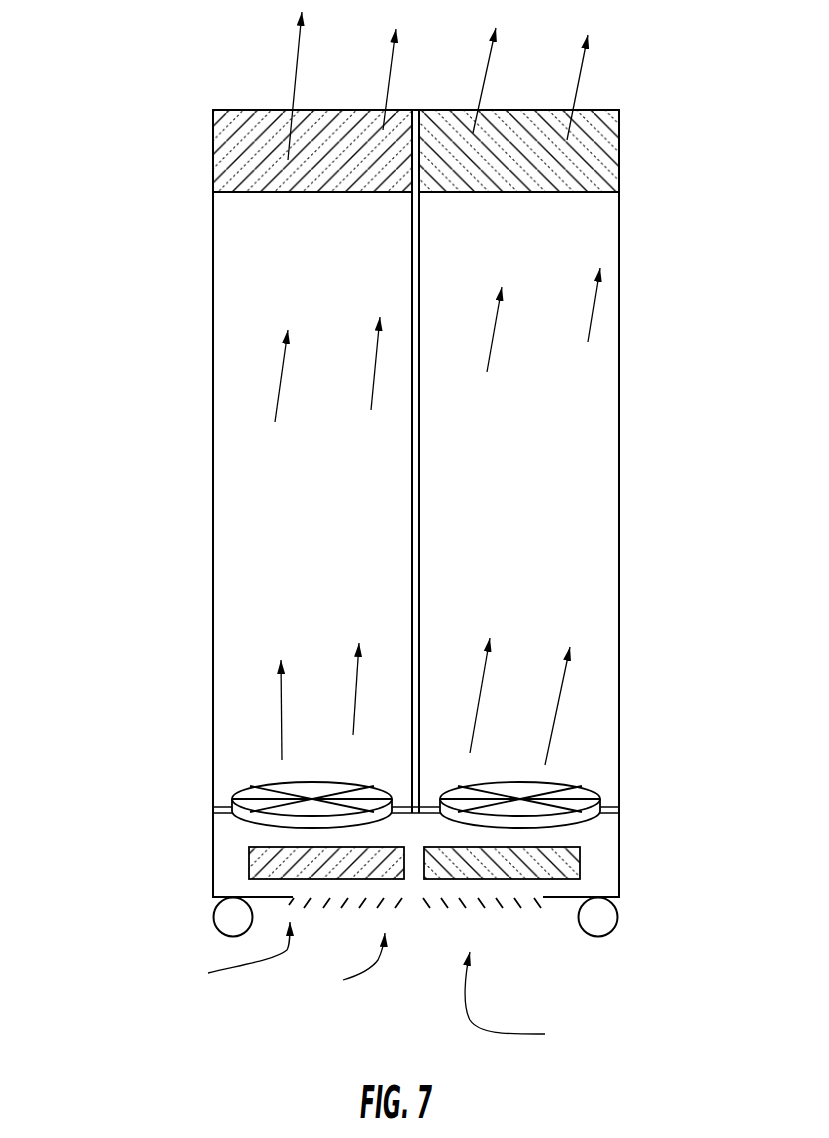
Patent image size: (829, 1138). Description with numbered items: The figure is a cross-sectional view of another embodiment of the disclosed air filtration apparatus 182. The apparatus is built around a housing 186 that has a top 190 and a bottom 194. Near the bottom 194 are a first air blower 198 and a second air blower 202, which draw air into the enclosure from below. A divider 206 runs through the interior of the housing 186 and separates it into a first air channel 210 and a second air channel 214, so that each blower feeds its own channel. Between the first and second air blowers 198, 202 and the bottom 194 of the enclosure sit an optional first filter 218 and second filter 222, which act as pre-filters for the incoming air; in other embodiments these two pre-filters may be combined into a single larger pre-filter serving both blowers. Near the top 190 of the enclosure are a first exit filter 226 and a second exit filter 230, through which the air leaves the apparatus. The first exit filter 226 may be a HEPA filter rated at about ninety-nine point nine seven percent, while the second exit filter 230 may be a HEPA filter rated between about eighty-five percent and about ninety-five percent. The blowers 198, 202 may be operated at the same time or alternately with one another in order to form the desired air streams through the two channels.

The air filtration apparatus 182 is at (68, 633).
The housing 186 is at (620, 341).
The top 190 is at (607, 110).
The bottom 194 is at (513, 907).
The first air blower 198 is at (252, 797).
The second air blower 202 is at (573, 798).
The divider 206 is at (420, 542).
The first air channel 210 is at (293, 477).
The second air channel 214 is at (560, 447).
The first filter 218 is at (263, 865).
The second filter 222 is at (570, 862).
The first exit filter 226 is at (235, 162).
The second exit filter 230 is at (612, 164).